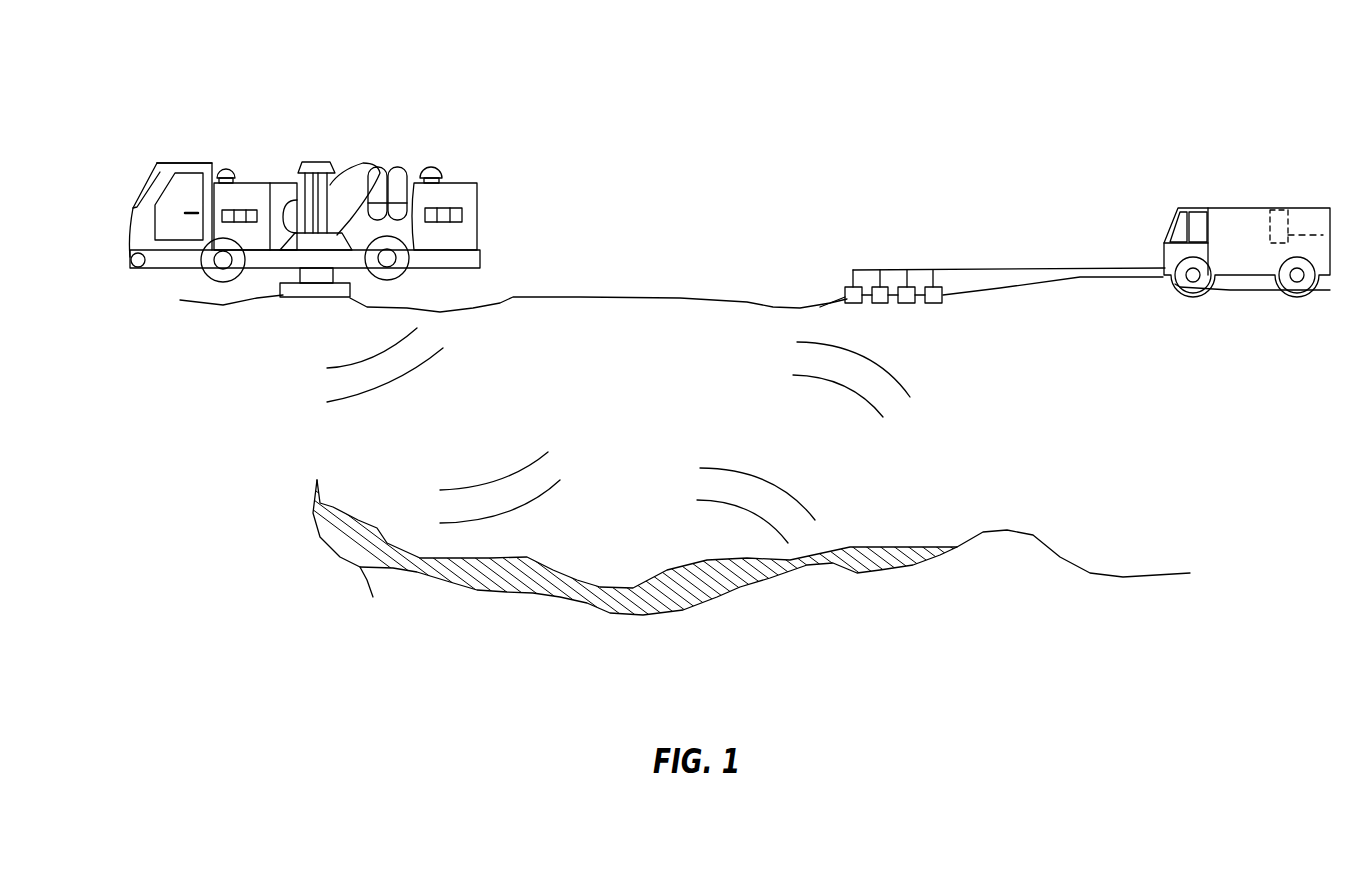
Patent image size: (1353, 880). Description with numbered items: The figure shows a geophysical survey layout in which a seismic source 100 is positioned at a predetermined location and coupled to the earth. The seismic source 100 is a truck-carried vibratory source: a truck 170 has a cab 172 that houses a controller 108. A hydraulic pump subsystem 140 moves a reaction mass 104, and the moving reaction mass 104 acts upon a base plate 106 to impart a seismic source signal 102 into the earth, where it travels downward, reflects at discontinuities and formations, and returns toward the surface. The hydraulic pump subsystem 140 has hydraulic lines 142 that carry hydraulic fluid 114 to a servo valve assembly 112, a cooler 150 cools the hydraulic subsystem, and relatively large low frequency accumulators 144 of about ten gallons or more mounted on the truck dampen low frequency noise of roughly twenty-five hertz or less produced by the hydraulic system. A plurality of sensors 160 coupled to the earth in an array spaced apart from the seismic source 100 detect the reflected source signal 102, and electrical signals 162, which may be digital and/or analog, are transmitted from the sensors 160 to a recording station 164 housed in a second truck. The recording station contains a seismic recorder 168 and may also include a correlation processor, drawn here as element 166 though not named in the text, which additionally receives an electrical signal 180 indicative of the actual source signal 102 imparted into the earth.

The seismic source 100 is at (308, 177).
The seismic source signal 102 is at (262, 379).
The reaction mass 104 is at (302, 177).
The base plate 106 is at (480, 277).
The controller 108 is at (207, 160).
The servo valve assembly 112 is at (278, 183).
The hydraulic fluid 114 is at (352, 183).
The hydraulic pump subsystem 140 is at (263, 182).
The hydraulic lines 142 is at (421, 156).
The low frequency accumulators 144 is at (400, 173).
The cooler 150 is at (477, 190).
The sensors 160 is at (935, 305).
The electrical signals 162 is at (992, 285).
The recording truck 164 is at (1216, 218).
The recording unit 166 is at (1278, 213).
The seismic recorder 168 is at (1310, 215).
The truck 170 is at (140, 187).
The cab 172 is at (177, 157).
The electrical signal 180 is at (572, 207).